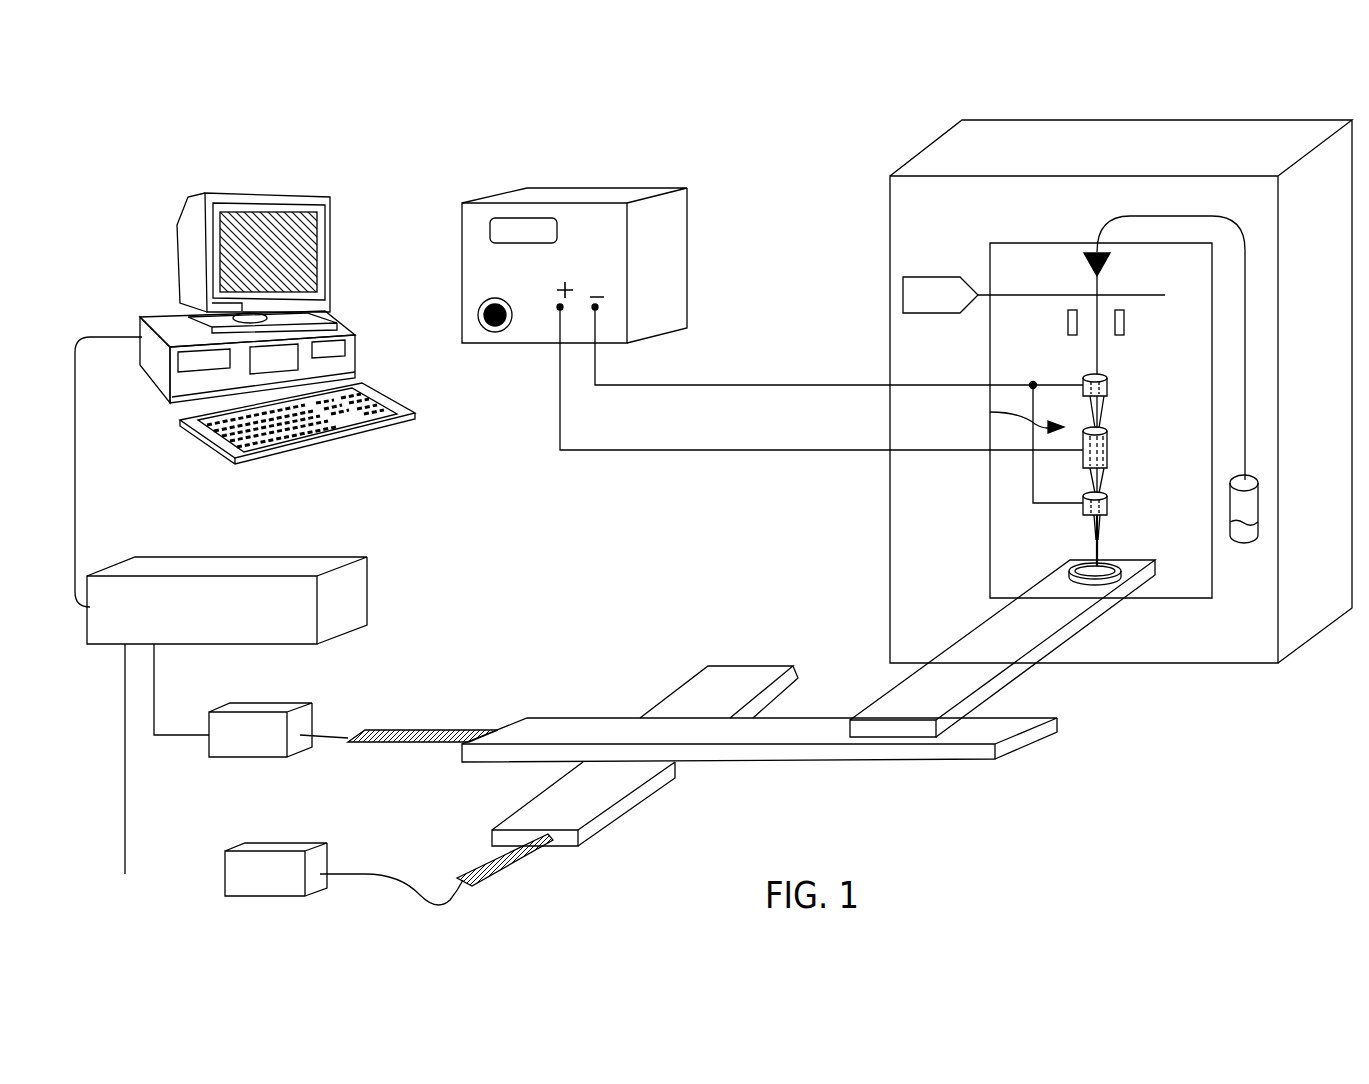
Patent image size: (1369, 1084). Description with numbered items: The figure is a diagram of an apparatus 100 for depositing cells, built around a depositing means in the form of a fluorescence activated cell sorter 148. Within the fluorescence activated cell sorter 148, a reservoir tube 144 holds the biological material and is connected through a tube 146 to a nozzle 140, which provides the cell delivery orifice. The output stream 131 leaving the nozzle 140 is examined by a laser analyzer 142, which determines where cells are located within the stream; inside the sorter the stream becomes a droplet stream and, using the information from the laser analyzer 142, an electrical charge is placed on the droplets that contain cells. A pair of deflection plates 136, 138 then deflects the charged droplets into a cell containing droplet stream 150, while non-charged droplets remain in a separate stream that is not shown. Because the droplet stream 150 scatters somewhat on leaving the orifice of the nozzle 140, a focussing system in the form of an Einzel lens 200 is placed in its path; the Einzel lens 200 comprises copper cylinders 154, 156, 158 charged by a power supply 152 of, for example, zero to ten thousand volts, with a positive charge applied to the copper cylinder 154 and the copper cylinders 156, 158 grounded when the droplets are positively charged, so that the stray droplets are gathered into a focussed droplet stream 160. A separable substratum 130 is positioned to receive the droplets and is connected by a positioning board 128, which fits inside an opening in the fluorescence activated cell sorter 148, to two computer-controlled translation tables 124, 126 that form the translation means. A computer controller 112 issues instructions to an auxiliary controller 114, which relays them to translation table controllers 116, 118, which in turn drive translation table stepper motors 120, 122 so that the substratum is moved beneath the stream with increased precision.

The apparatus 100 is at (622, 104).
The computer controller 112 is at (312, 196).
The auxiliary controller 114 is at (313, 560).
The translation table controller 116 is at (278, 707).
The translation table controller 118 is at (295, 848).
The translation table stepper motor 120 is at (407, 730).
The translation table stepper motor 122 is at (522, 858).
The translation table 124 is at (1003, 748).
The translation table 126 is at (753, 678).
The positioning board 128 is at (1002, 647).
The separable substratum 130 is at (1075, 565).
The output stream 131 is at (1097, 286).
The deflection plate 136 is at (1068, 325).
The deflection plate 138 is at (1123, 325).
The nozzle 140 is at (1107, 264).
The laser analyzer 142 is at (943, 276).
The reservoir tube 144 is at (1252, 505).
The tube 146 is at (1182, 213).
The fluorescence activated cell sorter 148 is at (1120, 148).
The cell containing droplet stream 150 is at (1098, 348).
The power supply 152 is at (628, 194).
The copper cylinder 154 is at (1107, 465).
The copper cylinder 156 is at (1110, 497).
The copper cylinder 158 is at (1107, 392).
The focussed droplet stream 160 is at (1098, 528).
The Einzel lens 200 is at (998, 414).